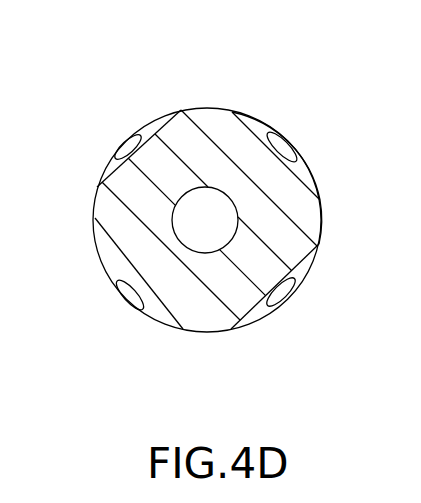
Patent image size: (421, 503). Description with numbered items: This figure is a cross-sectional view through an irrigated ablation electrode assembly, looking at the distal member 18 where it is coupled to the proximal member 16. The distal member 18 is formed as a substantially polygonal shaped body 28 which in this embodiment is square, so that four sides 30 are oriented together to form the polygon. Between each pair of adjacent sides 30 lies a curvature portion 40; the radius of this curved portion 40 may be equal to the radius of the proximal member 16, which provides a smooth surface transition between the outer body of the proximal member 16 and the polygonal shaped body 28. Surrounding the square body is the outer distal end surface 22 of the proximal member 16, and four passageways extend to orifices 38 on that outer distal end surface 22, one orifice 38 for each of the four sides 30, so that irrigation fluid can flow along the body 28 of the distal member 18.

The proximal member 16 is at (108, 107).
The distal member 18 is at (86, 224).
The outer distal end surface 22 is at (257, 115).
The polygonal shaped body 28 is at (303, 215).
The sides 30 is at (300, 176).
The orifices 38 is at (278, 147).
The curvature portion 40 is at (210, 108).